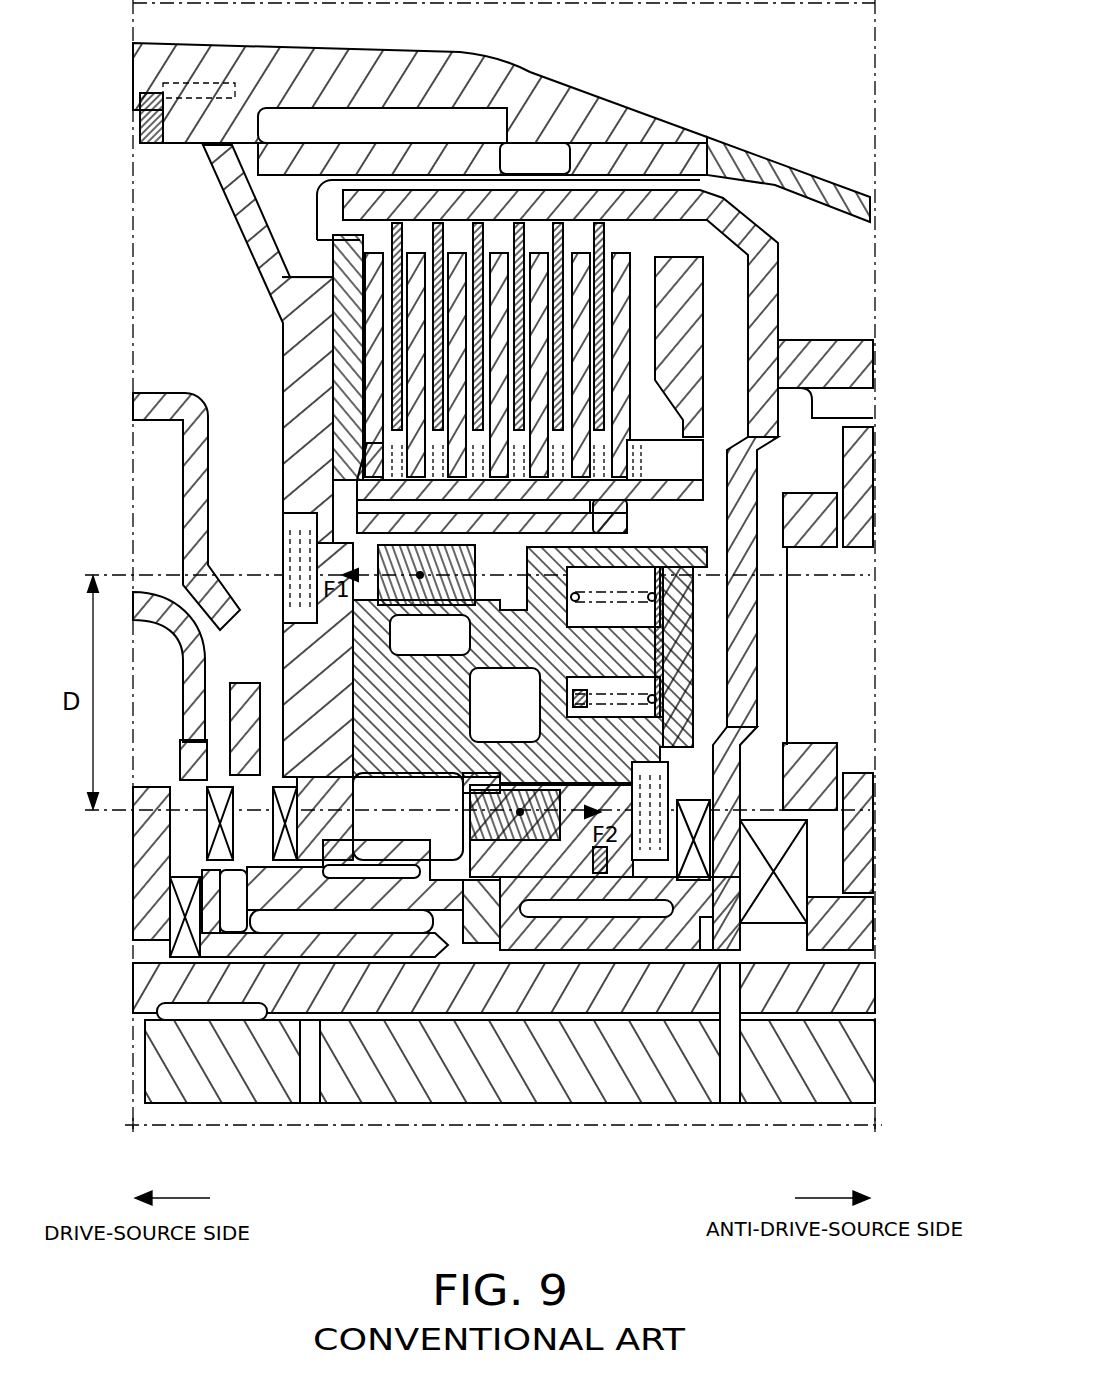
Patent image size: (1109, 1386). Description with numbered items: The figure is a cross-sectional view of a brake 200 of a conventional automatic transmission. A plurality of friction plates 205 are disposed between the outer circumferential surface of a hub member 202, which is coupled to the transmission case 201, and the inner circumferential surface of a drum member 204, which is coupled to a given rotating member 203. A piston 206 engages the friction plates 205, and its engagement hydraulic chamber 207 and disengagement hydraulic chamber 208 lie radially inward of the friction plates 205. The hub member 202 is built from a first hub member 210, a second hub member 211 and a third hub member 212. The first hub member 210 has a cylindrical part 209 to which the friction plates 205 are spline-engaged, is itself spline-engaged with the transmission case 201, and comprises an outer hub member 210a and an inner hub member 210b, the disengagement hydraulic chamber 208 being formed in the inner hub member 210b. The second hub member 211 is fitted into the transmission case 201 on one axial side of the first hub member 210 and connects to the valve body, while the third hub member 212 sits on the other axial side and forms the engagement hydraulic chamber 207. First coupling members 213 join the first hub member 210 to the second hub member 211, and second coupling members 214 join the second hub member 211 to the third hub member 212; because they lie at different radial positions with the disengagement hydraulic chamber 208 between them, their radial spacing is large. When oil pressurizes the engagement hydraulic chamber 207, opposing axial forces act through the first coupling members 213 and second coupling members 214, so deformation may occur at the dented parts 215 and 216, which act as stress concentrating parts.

The brake 200 is at (607, 190).
The transmission case 201 is at (688, 132).
The hub member 202 is at (712, 458).
The rotating member 203 is at (838, 340).
The drum member 204 is at (705, 172).
The friction plates 205 is at (480, 213).
The piston 206 is at (712, 290).
The engagement hydraulic chamber 207 is at (666, 577).
The disengagement hydraulic chamber 208 is at (666, 698).
The cylindrical part 209 is at (335, 495).
The first hub member 210 is at (335, 323).
The outer hub member 210a is at (335, 293).
The inner hub member 210b is at (383, 748).
The second hub member 211 is at (303, 380).
The third hub member 212 is at (676, 630).
The first coupling members 213 is at (283, 545).
The second coupling members 214 is at (810, 872).
The dented part 215 is at (397, 660).
The dented part 216 is at (488, 743).